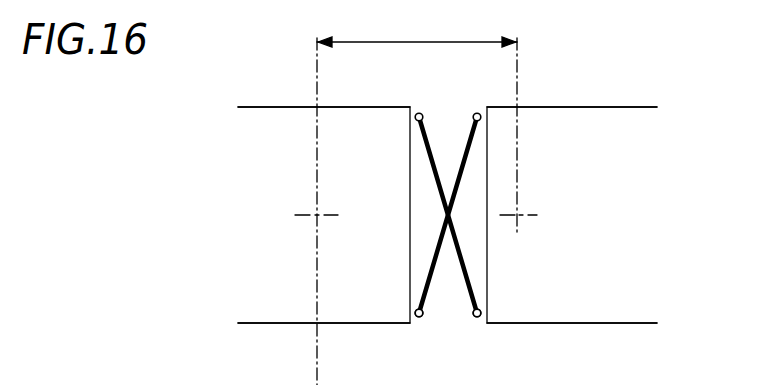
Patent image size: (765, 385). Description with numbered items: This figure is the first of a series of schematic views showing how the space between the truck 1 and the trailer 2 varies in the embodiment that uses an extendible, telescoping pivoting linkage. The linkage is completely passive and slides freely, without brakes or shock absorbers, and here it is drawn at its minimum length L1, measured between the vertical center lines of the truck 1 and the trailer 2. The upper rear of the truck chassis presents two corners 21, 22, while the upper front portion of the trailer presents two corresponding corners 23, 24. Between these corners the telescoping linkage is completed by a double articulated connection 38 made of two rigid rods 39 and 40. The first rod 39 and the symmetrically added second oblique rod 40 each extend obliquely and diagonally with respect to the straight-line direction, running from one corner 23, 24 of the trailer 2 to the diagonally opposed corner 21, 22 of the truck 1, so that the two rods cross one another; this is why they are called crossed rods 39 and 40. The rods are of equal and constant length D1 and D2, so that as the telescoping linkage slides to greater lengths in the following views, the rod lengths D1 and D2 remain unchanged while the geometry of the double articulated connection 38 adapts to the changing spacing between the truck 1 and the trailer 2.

The truck 1 is at (263, 124).
The trailer 2 is at (622, 128).
The corner of the upper rear of the truck chassis 21 is at (396, 121).
The corner of the upper rear of the truck chassis 22 is at (401, 292).
The corner of the upper front portion of the trailer 23 is at (500, 124).
The corner of the upper front portion of the trailer 24 is at (507, 290).
The double articulated connection 38 is at (472, 105).
The first rod 39 is at (415, 300).
The second oblique rigid rod 40 is at (469, 289).
The minimum length L1 is at (417, 26).
The length of the first crossed rod D1 is at (448, 123).
The length of the second crossed rod D2 is at (455, 317).